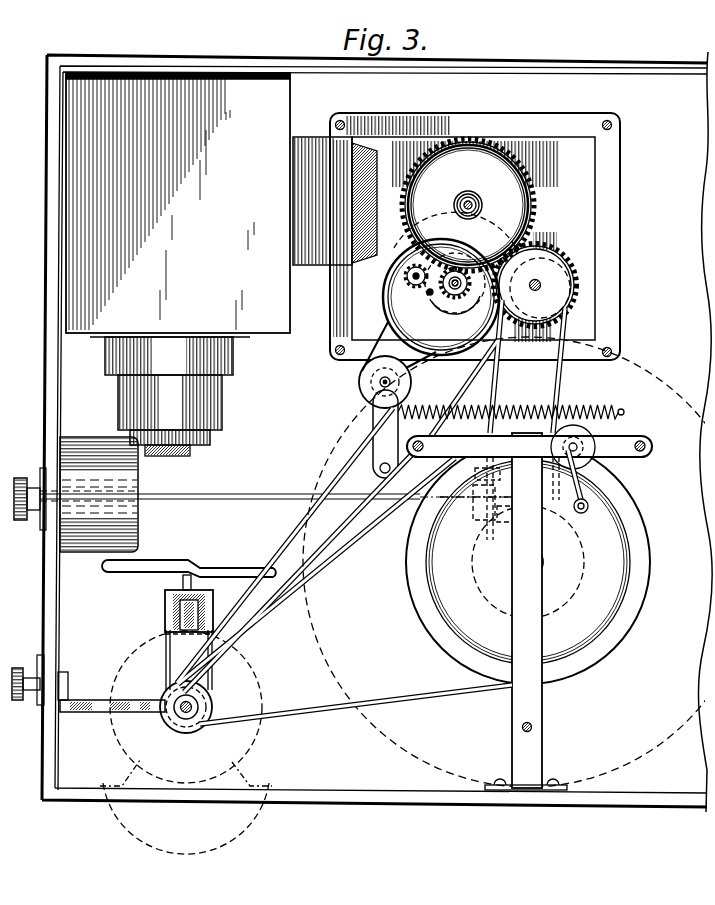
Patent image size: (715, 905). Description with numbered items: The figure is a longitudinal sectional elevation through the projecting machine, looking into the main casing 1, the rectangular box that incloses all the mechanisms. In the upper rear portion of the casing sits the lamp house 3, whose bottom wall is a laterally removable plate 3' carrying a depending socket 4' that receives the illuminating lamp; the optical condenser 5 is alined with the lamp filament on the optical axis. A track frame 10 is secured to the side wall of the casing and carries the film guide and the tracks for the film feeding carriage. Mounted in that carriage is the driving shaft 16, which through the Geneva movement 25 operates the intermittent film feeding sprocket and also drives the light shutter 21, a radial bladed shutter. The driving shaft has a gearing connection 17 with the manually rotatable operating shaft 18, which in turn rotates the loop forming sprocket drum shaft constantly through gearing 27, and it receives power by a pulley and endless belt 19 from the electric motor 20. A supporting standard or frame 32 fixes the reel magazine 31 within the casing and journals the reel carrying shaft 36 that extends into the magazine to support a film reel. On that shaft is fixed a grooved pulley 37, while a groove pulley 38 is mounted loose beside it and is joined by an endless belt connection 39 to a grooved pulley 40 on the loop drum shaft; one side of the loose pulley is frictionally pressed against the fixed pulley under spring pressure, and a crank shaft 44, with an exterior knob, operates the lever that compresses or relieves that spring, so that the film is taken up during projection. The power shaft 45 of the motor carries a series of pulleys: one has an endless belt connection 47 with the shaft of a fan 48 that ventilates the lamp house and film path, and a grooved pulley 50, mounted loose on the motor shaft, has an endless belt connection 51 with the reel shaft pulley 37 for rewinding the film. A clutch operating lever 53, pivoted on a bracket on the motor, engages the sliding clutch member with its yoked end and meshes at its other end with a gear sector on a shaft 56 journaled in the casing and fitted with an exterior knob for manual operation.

The main casing 1 is at (510, 65).
The lamp house 3 is at (178, 205).
The laterally removable plate 3' is at (180, 354).
The depending socket 4' is at (170, 415).
The optical condenser 5 is at (352, 194).
The track frame 10 is at (330, 312).
The driving shaft 16 is at (455, 298).
The gearing connection 17 is at (480, 138).
The operating shaft 18 is at (463, 203).
The pulley and endless belt 19 is at (260, 640).
The electric motor 20 is at (253, 740).
The light shutter 21 is at (99, 494).
The Geneva movement 25 is at (403, 275).
The gearing 27 is at (562, 280).
The spring 31 is at (346, 432).
The supporting standard or frame 32 is at (539, 709).
The reel carrying shaft 36 is at (542, 562).
The grooved pulley 37 is at (438, 626).
The groove pulley 38 is at (576, 586).
The endless belt connection 39 is at (562, 386).
The grooved pulley 40 is at (548, 268).
The crank shaft 44 is at (23, 478).
The power shaft 45 is at (187, 733).
The endless belt connection 47 is at (165, 602).
The fan 48 is at (153, 568).
The grooved pulley 50 is at (173, 727).
The endless belt connection 51 is at (287, 713).
The clutch operating lever 53 is at (110, 702).
The shaft 56 is at (33, 692).